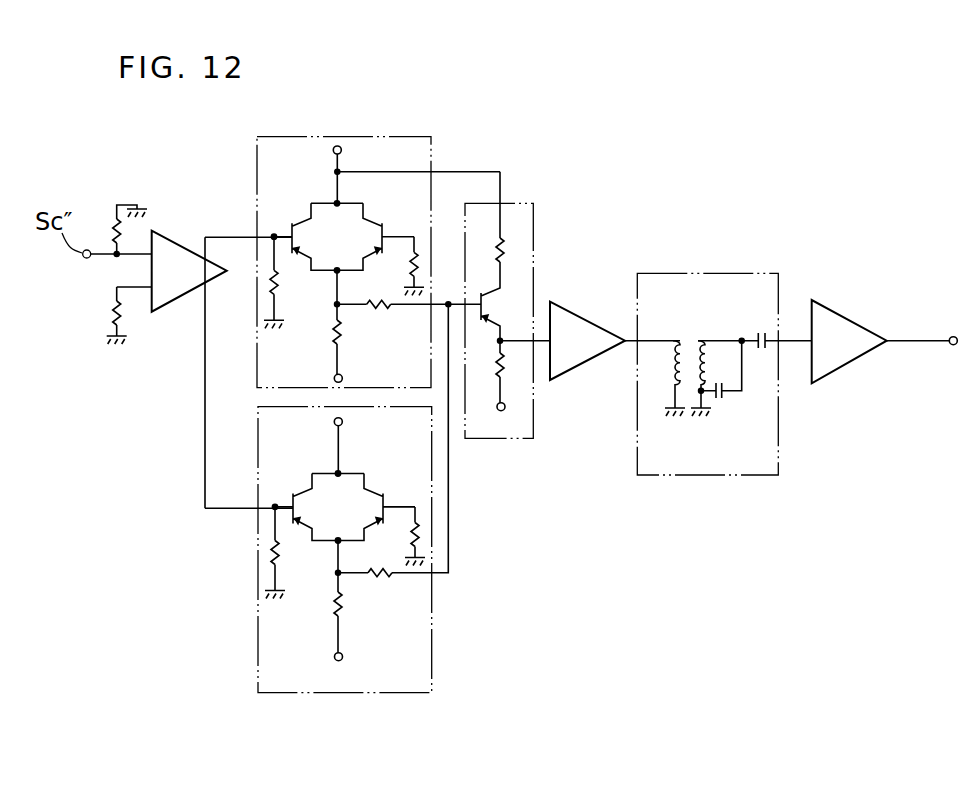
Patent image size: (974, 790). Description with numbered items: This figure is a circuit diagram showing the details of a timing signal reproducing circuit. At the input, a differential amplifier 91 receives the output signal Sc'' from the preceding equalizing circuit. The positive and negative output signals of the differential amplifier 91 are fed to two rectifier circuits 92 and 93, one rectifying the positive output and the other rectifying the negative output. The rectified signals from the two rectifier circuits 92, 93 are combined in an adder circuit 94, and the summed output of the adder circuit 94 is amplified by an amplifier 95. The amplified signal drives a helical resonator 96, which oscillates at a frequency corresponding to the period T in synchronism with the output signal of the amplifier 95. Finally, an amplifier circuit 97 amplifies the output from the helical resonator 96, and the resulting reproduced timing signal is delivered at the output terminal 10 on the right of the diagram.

The differential amplifier 91 is at (173, 300).
The rectifier circuit 92 is at (432, 158).
The rectifier circuit 93 is at (432, 592).
The adder circuit 94 is at (533, 427).
The amplifier 95 is at (568, 303).
The helical resonator 96 is at (725, 273).
The amplifier circuit 97 is at (850, 317).
The output terminal 10 is at (954, 345).